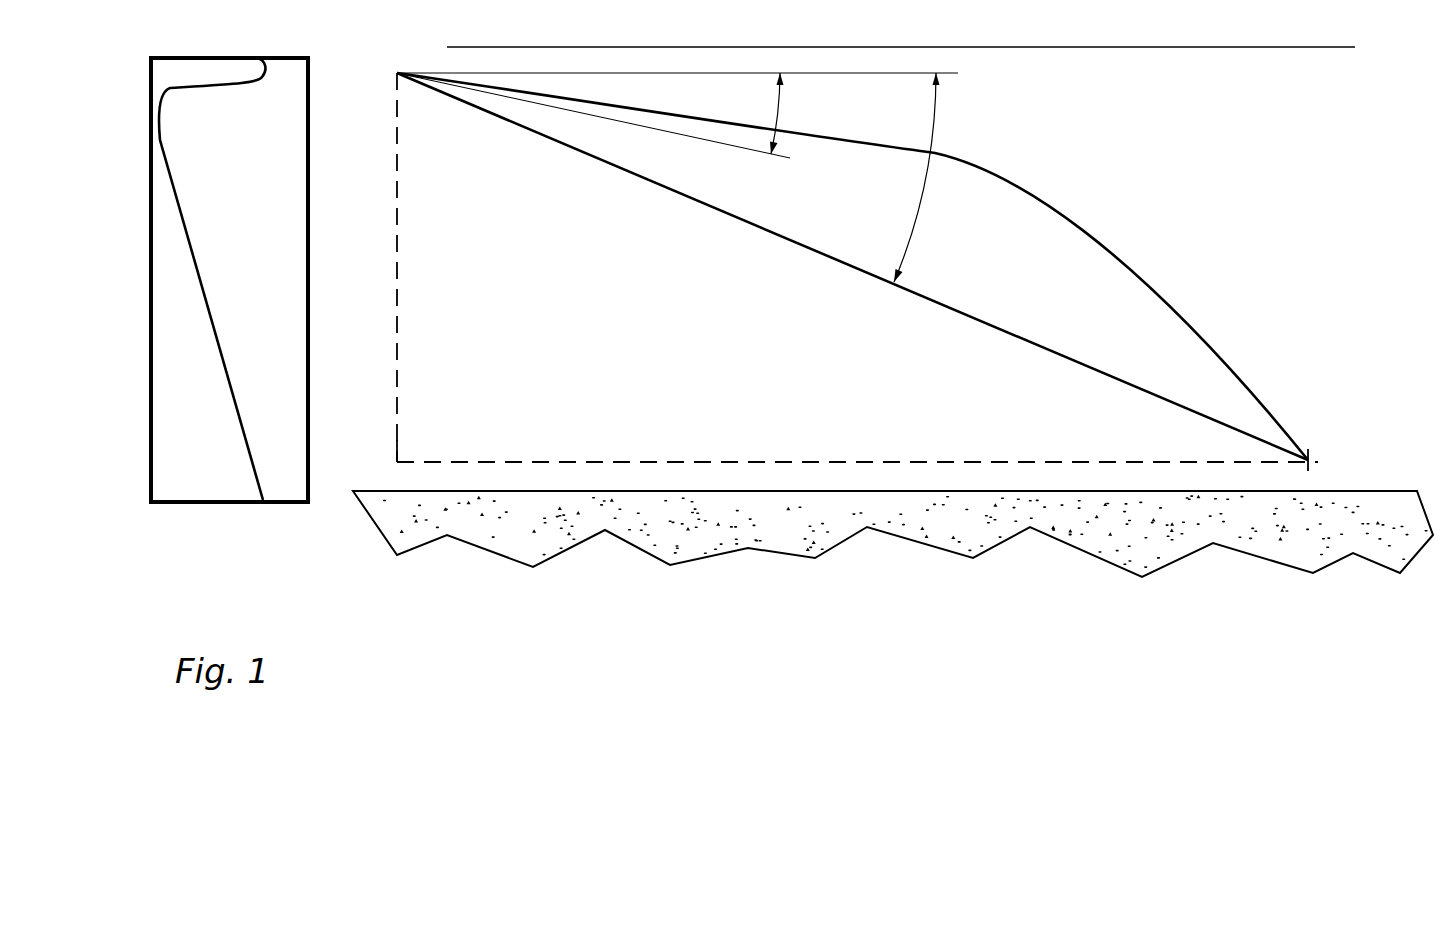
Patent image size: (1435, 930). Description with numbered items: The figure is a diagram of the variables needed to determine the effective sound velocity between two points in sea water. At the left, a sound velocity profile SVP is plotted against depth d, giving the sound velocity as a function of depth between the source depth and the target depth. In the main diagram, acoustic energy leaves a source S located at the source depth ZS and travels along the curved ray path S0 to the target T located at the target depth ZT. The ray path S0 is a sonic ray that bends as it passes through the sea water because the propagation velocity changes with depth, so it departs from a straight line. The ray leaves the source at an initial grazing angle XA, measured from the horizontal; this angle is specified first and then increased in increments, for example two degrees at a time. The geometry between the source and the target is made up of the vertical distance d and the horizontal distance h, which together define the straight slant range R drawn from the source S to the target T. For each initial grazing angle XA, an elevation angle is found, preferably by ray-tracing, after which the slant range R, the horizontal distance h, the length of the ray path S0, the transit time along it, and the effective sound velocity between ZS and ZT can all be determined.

The sound velocity profile SVP is at (229, 263).
The vertical distance d is at (268, 280).
The source S is at (885, 44).
The source depth ZS is at (651, 75).
The initial grazing angle XA is at (611, 115).
The ray path S0 is at (852, 266).
The slant range R is at (852, 266).
The horizontal distance h is at (857, 448).
The target depth ZT is at (370, 465).
The target T is at (1323, 461).